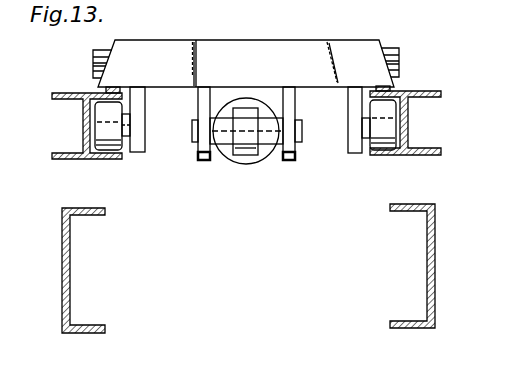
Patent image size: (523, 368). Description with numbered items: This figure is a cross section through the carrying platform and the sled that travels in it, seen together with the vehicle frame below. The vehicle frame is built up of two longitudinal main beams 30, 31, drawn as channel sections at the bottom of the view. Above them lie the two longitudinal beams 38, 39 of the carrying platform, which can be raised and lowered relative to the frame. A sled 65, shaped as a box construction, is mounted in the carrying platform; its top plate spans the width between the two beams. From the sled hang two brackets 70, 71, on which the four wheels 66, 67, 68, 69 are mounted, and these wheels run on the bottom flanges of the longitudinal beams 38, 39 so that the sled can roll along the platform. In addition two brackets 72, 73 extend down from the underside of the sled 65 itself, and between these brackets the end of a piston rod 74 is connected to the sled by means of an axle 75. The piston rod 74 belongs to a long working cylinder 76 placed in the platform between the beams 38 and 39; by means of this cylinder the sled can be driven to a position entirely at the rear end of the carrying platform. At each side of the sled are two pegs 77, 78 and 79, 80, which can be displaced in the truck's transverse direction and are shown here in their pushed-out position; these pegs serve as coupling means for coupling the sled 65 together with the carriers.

The longitudinal main beam 30 is at (428, 258).
The longitudinal main beam 31 is at (70, 278).
The longitudinal beam 38 is at (408, 120).
The longitudinal beam 39 is at (83, 120).
The sled 65 is at (163, 47).
The wheel 66 is at (384, 149).
The wheel 67 is at (369, 152).
The wheel 68 is at (137, 151).
The wheel 69 is at (110, 145).
The bracket 70 is at (143, 114).
The bracket 71 is at (353, 120).
The bracket 72 is at (207, 100).
The bracket 73 is at (285, 103).
The piston rod 74 is at (232, 163).
The axle 75 is at (300, 122).
The working cylinder 76 is at (265, 160).
The peg 77 is at (429, 60).
The peg 78 is at (397, 53).
The peg 79 is at (70, 61).
The peg 80 is at (92, 72).